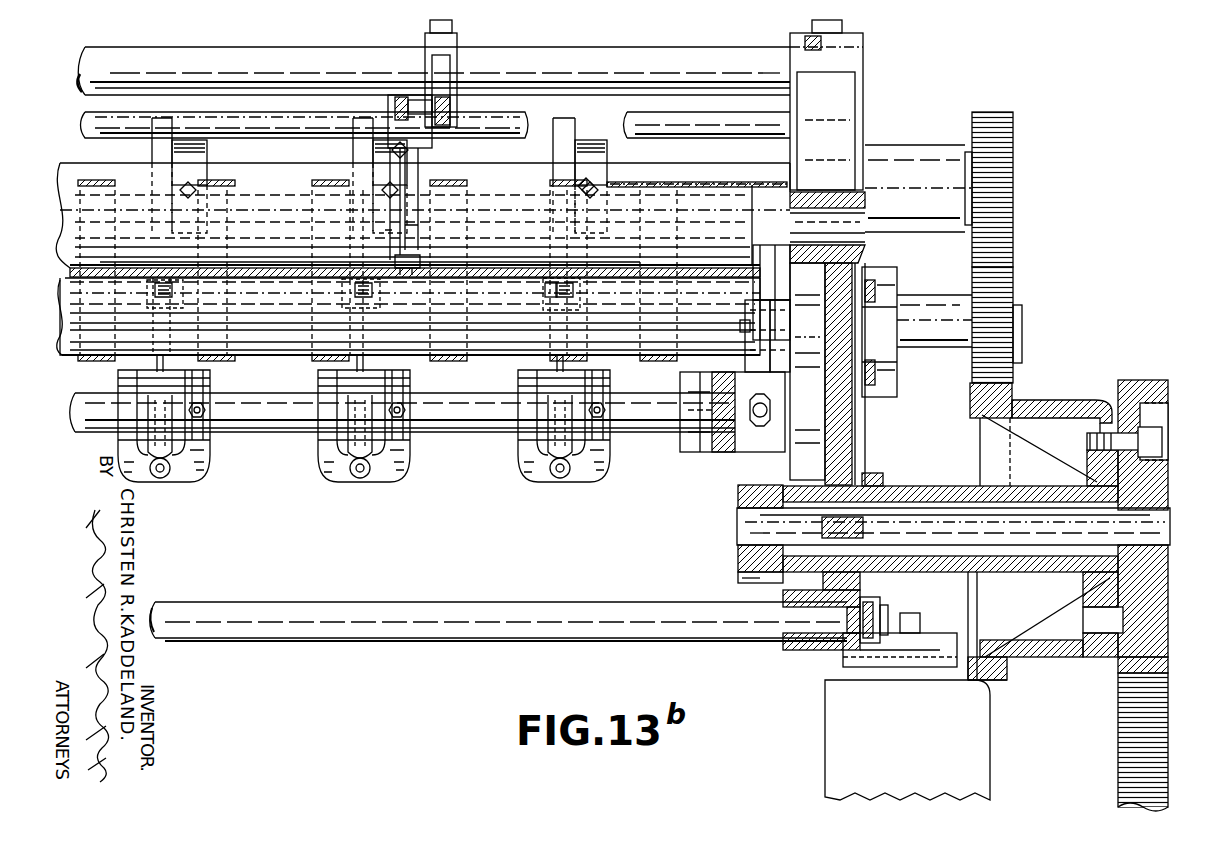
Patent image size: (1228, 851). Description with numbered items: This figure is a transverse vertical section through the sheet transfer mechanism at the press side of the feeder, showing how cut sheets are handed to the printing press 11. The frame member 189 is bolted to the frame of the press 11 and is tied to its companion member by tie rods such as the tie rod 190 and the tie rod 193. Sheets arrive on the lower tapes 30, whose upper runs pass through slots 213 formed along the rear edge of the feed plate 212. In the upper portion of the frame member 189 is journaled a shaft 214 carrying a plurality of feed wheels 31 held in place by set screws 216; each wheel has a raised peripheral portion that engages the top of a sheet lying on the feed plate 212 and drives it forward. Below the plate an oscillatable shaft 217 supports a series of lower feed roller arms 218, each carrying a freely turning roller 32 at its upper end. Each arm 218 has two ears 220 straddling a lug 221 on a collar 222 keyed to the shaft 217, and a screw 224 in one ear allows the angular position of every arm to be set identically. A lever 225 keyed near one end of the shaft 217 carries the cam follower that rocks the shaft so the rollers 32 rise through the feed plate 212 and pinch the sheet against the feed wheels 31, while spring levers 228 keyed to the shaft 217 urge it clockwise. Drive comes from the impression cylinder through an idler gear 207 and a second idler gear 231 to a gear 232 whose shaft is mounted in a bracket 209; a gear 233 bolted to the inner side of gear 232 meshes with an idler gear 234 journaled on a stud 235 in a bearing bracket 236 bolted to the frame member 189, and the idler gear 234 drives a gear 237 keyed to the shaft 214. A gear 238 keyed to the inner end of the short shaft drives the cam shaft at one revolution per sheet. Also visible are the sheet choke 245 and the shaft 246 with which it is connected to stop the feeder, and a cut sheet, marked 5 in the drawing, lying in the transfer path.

The tie rod 193 is at (592, 58).
The shaft 246 is at (462, 140).
The sheet choke 245 is at (352, 220).
The feed wheel 31 is at (160, 152).
The set screw 216 is at (600, 178).
The shaft 214 is at (722, 171).
The sleeve 5 is at (492, 265).
The feed plate 212 is at (250, 282).
The slot 213 is at (245, 298).
The roller 32 is at (150, 302).
The gear 232 is at (545, 293).
The lower tape 30 is at (88, 362).
The lower feed roller arm 218 is at (165, 362).
The spring lever 228 is at (750, 320).
The shaft 217 is at (488, 432).
The ear 220 is at (345, 450).
The lug 221 is at (318, 478).
The collar 222 is at (318, 442).
The screw 224 is at (160, 480).
The lever 225 is at (695, 452).
The bearing bracket 236 is at (912, 310).
The gear 237 is at (1013, 128).
The idler gear 234 is at (1013, 284).
The stud 235 is at (1022, 325).
The bracket 209 is at (888, 482).
The gear 233 is at (1012, 395).
The idler gear 207 is at (1170, 520).
The gear 238 is at (735, 566).
The idler gear 231 is at (1118, 722).
The tie rod 190 is at (395, 610).
The frame member 189 is at (830, 665).
The printing press 11 is at (830, 735).